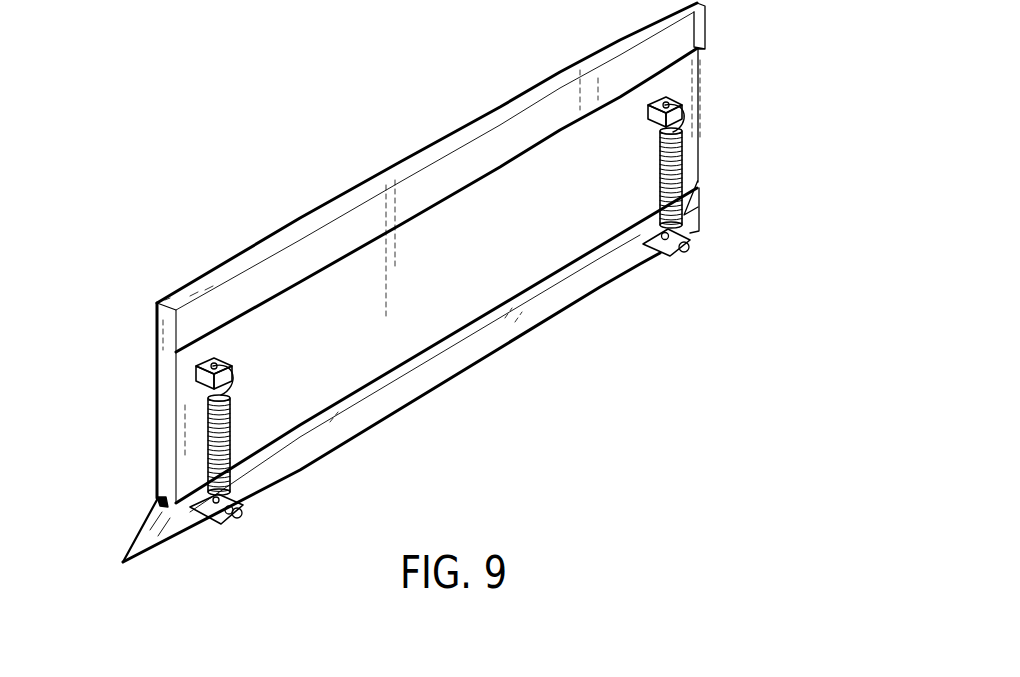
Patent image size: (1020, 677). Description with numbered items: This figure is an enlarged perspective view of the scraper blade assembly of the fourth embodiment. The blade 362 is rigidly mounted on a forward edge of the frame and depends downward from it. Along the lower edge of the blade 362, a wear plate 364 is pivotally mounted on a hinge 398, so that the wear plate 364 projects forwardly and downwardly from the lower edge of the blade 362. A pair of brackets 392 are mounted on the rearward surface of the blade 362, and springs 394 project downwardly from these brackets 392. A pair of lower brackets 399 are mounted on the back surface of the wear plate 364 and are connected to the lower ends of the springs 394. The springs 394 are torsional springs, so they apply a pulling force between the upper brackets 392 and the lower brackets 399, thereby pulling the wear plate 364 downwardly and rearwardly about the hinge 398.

The blade 362 is at (505, 268).
The wear plate 364 is at (462, 353).
The brackets 392 is at (195, 376).
The springs 394 is at (209, 443).
The hinge 398 is at (158, 498).
The lower brackets 399 is at (208, 524).